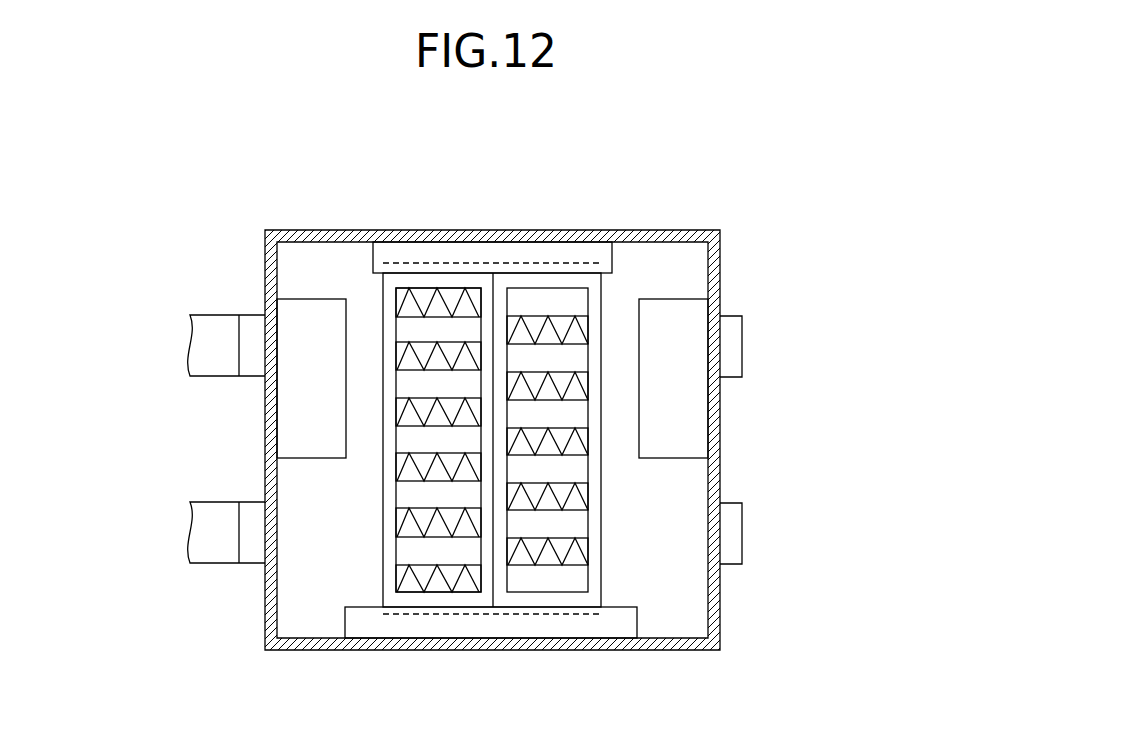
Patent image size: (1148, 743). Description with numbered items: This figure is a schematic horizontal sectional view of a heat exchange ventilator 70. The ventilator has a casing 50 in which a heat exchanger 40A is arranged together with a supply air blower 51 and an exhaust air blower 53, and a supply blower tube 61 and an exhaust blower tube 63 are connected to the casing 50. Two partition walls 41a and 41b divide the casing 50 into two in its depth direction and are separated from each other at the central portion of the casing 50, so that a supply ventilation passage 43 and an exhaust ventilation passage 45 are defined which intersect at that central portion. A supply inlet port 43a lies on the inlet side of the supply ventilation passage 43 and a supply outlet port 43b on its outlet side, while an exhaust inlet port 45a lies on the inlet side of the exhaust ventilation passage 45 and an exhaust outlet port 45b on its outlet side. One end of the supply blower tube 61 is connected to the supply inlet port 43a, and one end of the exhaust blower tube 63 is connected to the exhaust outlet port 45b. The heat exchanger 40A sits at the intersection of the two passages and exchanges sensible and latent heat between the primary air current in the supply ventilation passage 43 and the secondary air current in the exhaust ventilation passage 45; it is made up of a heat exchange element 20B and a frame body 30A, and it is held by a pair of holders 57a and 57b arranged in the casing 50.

The heat exchange ventilator 70 is at (724, 160).
The casing 50 is at (490, 238).
The holder 57a is at (543, 252).
The holder 57b is at (613, 628).
The partition wall 41a is at (313, 265).
The partition wall 41b is at (662, 263).
The frame body 30A is at (383, 565).
The heat exchange element 20B is at (578, 518).
The heat exchanger 40A is at (497, 594).
The exhaust air blower 53 is at (290, 418).
The supply air blower 51 is at (690, 418).
The exhaust ventilation passage 45 is at (290, 478).
The supply ventilation passage 43 is at (690, 478).
The exhaust blower tube 63 is at (202, 325).
The exhaust outlet port 45b is at (252, 325).
The supply blower tube 61 is at (202, 553).
The supply inlet port 43a is at (250, 553).
The supply outlet port 43b is at (730, 327).
The exhaust inlet port 45a is at (730, 555).